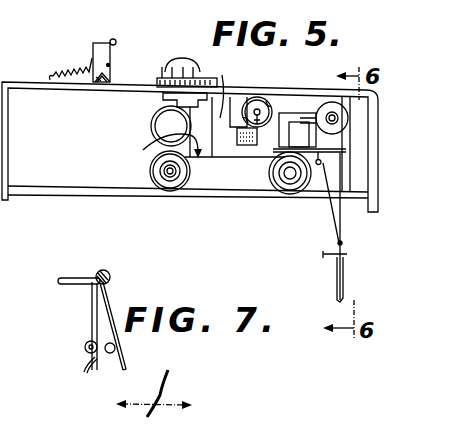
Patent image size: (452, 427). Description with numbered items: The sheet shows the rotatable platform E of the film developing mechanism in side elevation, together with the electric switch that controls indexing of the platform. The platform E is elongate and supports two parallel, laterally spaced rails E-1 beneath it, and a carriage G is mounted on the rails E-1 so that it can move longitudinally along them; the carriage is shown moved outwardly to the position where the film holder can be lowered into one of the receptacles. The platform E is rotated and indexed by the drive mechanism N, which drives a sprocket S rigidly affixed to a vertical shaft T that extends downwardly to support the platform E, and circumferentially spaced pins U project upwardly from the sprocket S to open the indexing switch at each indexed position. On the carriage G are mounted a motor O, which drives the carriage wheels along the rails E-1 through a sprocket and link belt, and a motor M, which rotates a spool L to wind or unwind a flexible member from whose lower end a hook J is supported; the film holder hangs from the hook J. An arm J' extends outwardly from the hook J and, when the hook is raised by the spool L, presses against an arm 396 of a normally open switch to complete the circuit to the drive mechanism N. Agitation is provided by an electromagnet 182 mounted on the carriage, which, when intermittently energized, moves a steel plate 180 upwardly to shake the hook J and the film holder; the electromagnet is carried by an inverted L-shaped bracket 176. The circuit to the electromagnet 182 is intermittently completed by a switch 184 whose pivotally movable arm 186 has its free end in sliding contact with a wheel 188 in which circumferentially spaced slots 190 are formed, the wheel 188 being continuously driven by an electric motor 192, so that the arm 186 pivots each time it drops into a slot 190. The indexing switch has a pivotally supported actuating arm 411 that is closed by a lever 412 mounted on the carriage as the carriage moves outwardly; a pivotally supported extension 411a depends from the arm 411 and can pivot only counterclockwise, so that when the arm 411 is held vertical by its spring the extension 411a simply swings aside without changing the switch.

In FIG. 5, the actuating arm 411 is at (112, 57).
In FIG. 7, the actuating arm 411 is at (92, 315).
In FIG. 5, the pivotally supported extension 411a is at (110, 72).
In FIG. 7, the pivotally supported extension 411a is at (92, 363).
In FIG. 7, the lever 412 is at (170, 372).
In FIG. 5, the switch 184 is at (222, 108).
In FIG. 5, the wheel 188 is at (272, 110).
In FIG. 5, the slots 190 is at (273, 110).
In FIG. 5, the pivotally movable arm 186 is at (240, 127).
In FIG. 5, the inverted L-shaped bracket 176 is at (241, 138).
In FIG. 5, the electric motor 192 is at (262, 131).
In FIG. 5, the electromagnet 182 is at (275, 147).
In FIG. 5, the steel plate 180 is at (288, 191).
In FIG. 5, the arm 396 is at (345, 135).
In FIG. 5, the platform E is at (38, 82).
In FIG. 5, the rails E-1 is at (48, 200).
In FIG. 5, the drive mechanism (motor) N is at (157, 77).
In FIG. 5, the sprocket S is at (160, 87).
In FIG. 5, the motor O is at (151, 123).
In FIG. 5, the carriage G is at (151, 156).
In FIG. 5, the vertical shaft T is at (203, 68).
In FIG. 5, the pins U is at (243, 53).
In FIG. 5, the spool L is at (343, 115).
In FIG. 5, the motor M is at (343, 122).
In FIG. 5, the hook J is at (343, 227).
In FIG. 5, the arm J' is at (303, 274).